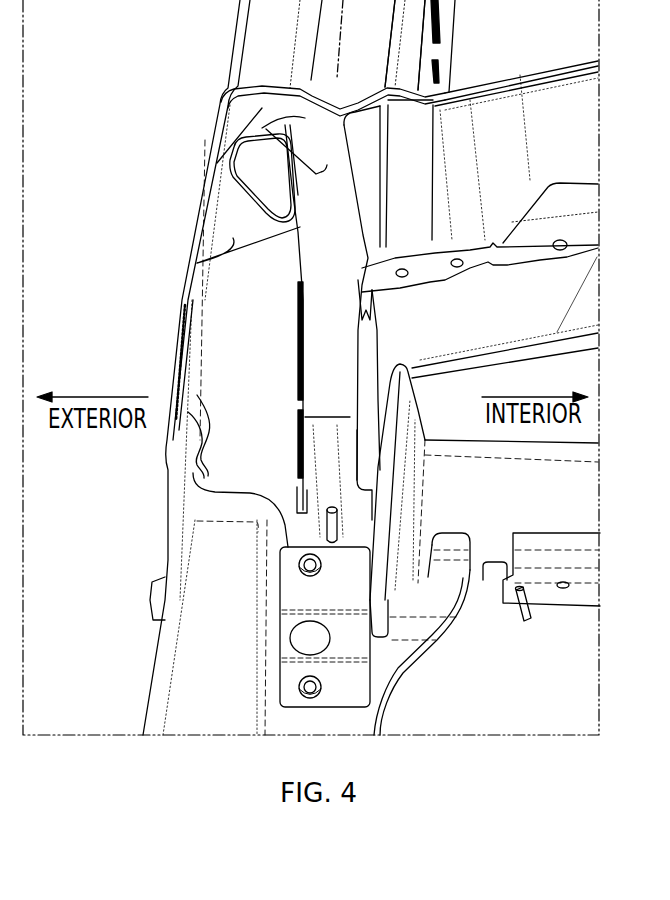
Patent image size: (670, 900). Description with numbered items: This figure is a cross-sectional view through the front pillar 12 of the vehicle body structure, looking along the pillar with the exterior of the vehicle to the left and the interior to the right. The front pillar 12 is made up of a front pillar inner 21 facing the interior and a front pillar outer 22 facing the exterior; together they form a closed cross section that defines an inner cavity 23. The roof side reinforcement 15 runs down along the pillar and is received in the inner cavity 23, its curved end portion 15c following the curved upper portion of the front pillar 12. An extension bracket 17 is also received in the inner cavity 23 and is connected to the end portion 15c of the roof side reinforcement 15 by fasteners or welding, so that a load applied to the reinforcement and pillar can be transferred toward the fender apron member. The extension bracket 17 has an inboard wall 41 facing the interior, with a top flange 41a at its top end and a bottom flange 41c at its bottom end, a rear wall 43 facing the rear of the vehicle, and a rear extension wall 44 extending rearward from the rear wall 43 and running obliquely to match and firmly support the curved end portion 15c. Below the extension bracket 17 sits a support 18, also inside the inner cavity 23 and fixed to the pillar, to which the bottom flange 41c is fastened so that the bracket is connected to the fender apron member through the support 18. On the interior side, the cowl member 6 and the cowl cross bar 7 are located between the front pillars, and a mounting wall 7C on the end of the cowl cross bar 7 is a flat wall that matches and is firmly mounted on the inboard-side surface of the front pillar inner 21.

The cowl member 6 is at (558, 85).
The cowl cross bar 7 is at (568, 455).
The mounting wall 7C is at (408, 403).
The front pillar 12 is at (98, 518).
The roof side reinforcement 15 is at (215, 165).
The end portion of the roof side reinforcement 15c is at (248, 197).
The extension bracket 17 is at (328, 235).
The support 18 is at (357, 352).
The front pillar inner 21 is at (378, 170).
The front pillar outer 22 is at (177, 351).
The inner cavity 23 is at (262, 128).
The inboard wall 41 is at (304, 268).
The top flange 41a is at (337, 100).
The bottom flange 41c is at (313, 527).
The rear wall 43 is at (223, 397).
The rear extension wall 44 is at (233, 238).